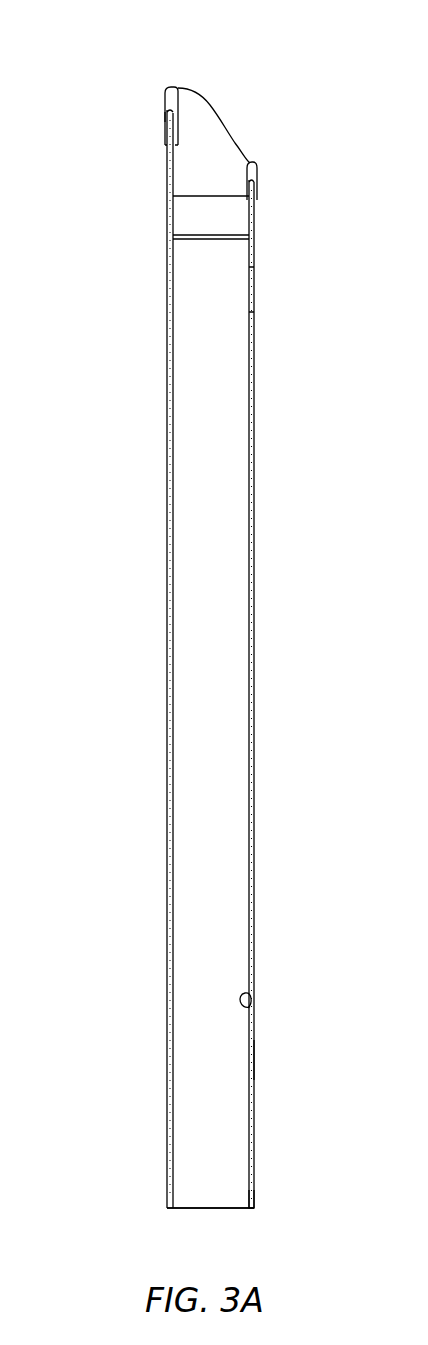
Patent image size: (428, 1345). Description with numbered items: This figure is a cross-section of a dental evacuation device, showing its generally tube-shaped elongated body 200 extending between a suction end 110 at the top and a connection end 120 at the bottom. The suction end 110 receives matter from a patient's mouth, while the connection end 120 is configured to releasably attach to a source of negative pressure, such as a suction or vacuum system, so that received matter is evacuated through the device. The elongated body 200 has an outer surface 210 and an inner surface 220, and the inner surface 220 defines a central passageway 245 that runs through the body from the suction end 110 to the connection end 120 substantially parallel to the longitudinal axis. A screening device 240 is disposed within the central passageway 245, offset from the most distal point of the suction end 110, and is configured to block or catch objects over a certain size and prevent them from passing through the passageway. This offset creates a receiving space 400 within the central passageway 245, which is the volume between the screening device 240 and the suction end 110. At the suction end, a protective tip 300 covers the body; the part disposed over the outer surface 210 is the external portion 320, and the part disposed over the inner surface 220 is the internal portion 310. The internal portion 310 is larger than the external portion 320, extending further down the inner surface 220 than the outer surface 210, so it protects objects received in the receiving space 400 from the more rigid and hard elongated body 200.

The suction end 110 is at (258, 108).
The connection end 120 is at (263, 1208).
The elongated body 200 is at (180, 405).
The outer surface 210 is at (254, 1062).
The inner surface 220 is at (250, 1007).
The screening device 240 is at (222, 240).
The central passageway 245 is at (215, 1180).
The protective tip 300 is at (165, 85).
The internal portion 310 is at (178, 155).
The external portion 320 is at (163, 116).
The receiving space 400 is at (190, 212).